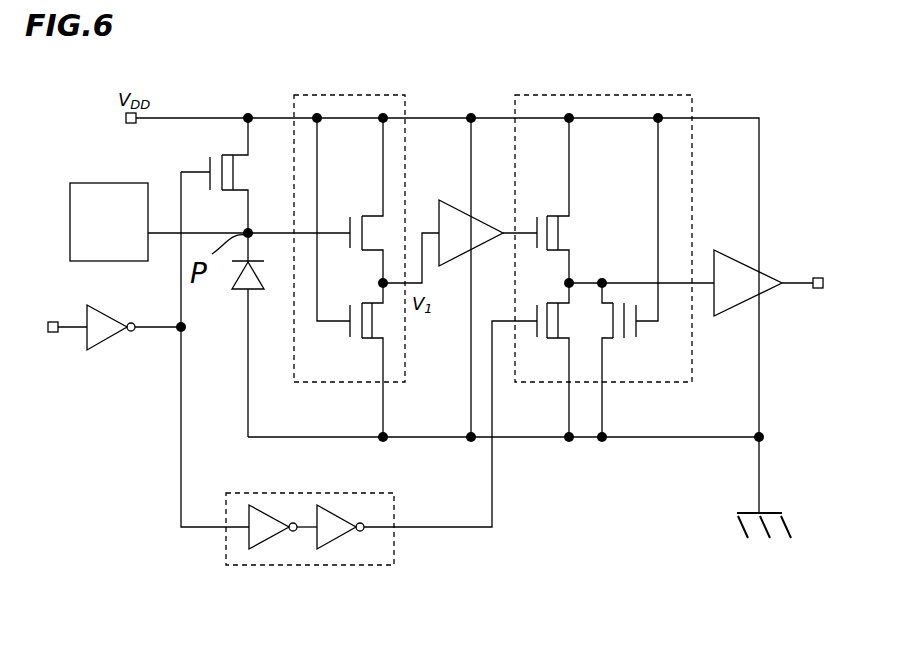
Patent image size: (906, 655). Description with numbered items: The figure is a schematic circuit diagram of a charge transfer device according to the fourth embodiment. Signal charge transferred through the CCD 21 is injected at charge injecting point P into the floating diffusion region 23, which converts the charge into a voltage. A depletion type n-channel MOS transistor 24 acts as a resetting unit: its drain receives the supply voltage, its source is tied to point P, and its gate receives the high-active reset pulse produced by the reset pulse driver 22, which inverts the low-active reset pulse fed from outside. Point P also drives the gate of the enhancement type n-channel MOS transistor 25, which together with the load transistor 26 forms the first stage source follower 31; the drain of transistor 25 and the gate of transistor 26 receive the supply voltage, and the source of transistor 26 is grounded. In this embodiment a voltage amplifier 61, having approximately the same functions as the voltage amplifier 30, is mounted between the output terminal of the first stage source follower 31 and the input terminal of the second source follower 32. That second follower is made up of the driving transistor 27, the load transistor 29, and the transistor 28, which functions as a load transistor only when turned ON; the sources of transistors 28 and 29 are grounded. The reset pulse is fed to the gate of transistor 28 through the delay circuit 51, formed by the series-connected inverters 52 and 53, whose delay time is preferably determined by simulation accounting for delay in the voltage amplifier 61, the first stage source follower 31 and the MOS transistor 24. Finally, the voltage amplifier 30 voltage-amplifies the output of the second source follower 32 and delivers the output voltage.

The CCD 21 is at (84, 183).
The reset pulse driver 22 is at (82, 348).
The floating diffusion region 23 is at (240, 290).
The depletion type n-channel MOS transistor 24 is at (237, 155).
The enhancement type n-channel MOS transistor 25 is at (380, 215).
The enhancement type n-channel MOS transistor doped with p-type impurity 26 is at (372, 340).
The enhancement type n-channel MOS transistor doped with p-type impurity 27 is at (565, 233).
The enhancement type n-channel MOS transistor doped with p-type impurity 28 is at (560, 340).
The enhancement type n-channel MOS transistor doped with p-type impurity 29 is at (608, 340).
The voltage amplifier 30 is at (772, 262).
The first stage source follower 31 is at (312, 383).
The second source follower 32 is at (637, 93).
The delay circuit 51 is at (241, 566).
The inverter 52 is at (266, 540).
The inverter 53 is at (334, 540).
The voltage amplifier 61 is at (453, 203).